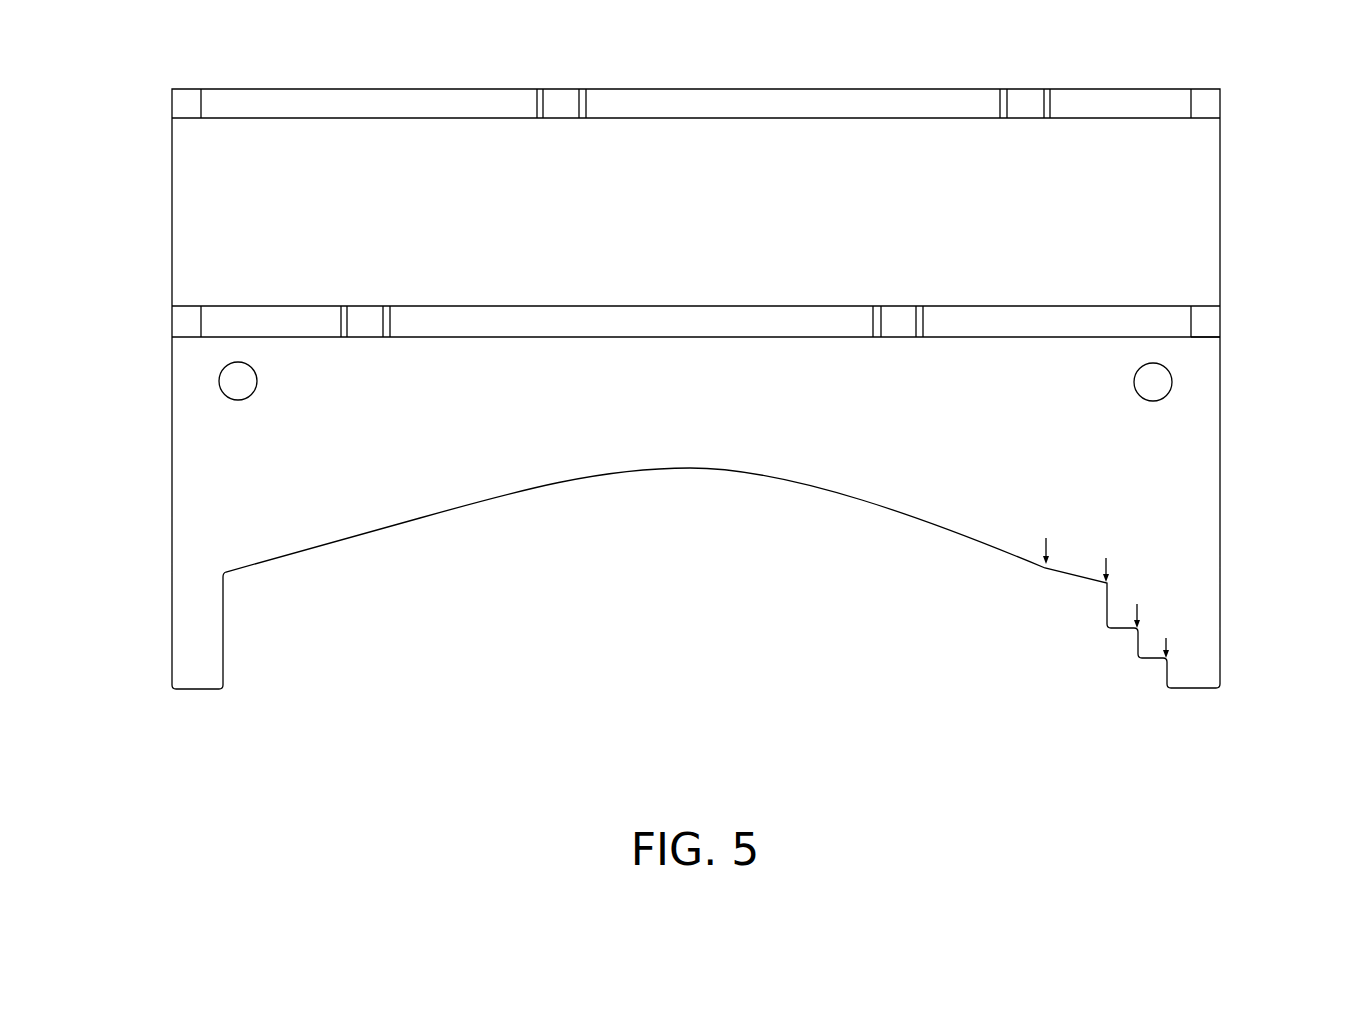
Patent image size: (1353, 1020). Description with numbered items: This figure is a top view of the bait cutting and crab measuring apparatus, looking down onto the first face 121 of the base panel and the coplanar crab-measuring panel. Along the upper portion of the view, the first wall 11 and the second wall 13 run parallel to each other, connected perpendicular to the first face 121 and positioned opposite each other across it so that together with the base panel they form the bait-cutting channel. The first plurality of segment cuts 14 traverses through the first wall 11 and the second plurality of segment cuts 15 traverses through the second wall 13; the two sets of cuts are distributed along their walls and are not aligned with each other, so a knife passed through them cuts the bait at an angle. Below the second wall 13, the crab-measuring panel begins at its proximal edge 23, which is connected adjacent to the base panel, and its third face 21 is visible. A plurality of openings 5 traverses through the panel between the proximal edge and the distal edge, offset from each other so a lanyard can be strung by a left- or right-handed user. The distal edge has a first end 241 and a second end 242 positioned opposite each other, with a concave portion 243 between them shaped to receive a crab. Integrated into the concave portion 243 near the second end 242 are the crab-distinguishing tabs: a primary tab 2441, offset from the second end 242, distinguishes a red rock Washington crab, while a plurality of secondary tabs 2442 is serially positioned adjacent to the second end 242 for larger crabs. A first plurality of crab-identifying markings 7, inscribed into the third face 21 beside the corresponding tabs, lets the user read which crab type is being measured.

The first wall 11 is at (775, 103).
The first plurality of segment cuts 14 is at (560, 105).
The first face 121 is at (698, 227).
The second wall 13 is at (583, 318).
The second plurality of segment cuts 15 is at (366, 320).
The proximal edge 23 is at (1222, 337).
The plurality of openings 5 is at (232, 381).
The third face 21 is at (701, 429).
The first plurality of crab-identifying markings 7 is at (1026, 502).
The concave portion 243 is at (694, 470).
The first end 241 is at (160, 665).
The second end 242 is at (1228, 668).
The primary tab 2441 is at (1046, 570).
The plurality of secondary tabs 2442 is at (1108, 630).